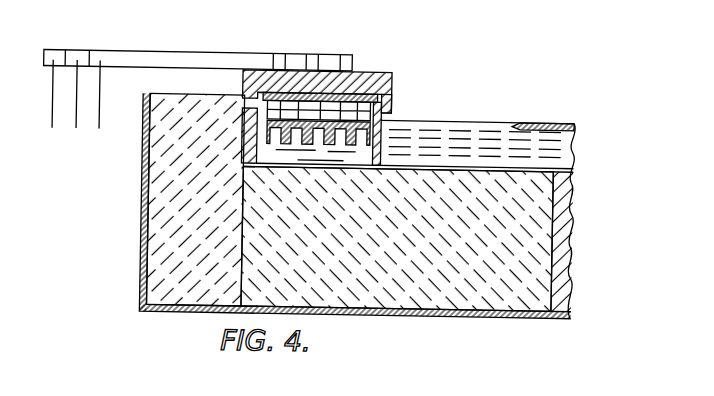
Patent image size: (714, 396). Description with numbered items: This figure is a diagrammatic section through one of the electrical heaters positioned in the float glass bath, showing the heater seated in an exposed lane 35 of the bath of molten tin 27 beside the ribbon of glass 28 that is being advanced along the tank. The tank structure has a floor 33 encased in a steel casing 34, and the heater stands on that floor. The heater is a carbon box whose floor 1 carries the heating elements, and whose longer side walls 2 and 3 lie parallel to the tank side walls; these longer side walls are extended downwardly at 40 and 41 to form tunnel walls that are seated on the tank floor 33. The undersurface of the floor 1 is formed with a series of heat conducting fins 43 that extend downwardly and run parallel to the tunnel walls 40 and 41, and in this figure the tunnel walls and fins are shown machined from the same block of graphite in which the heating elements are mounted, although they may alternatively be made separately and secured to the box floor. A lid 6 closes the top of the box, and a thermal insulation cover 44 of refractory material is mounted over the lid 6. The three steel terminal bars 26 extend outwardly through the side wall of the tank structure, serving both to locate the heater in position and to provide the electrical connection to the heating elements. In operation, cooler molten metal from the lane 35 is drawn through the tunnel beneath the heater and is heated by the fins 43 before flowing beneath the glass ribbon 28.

The floor 1 is at (379, 148).
The longer side wall 2 is at (383, 108).
The longer side wall 3 is at (259, 95).
The lid 6 is at (357, 94).
The terminal bar 26 is at (179, 60).
The bath of molten tin 27 is at (570, 146).
The ribbon of glass 28 is at (557, 122).
The floor 33 is at (550, 215).
The steel casing 34 is at (144, 235).
The exposed lane 35 is at (497, 140).
The tunnel wall 40 is at (378, 136).
The tunnel wall 41 is at (251, 140).
The heat conducting fins 43 is at (370, 128).
The thermal insulation cover 44 is at (383, 74).